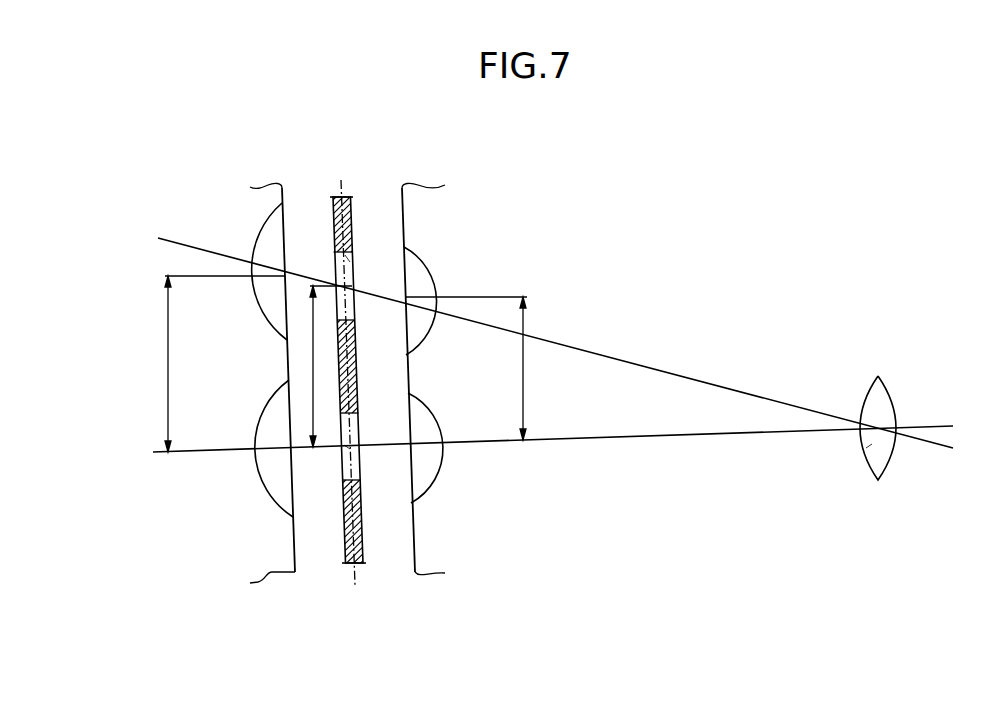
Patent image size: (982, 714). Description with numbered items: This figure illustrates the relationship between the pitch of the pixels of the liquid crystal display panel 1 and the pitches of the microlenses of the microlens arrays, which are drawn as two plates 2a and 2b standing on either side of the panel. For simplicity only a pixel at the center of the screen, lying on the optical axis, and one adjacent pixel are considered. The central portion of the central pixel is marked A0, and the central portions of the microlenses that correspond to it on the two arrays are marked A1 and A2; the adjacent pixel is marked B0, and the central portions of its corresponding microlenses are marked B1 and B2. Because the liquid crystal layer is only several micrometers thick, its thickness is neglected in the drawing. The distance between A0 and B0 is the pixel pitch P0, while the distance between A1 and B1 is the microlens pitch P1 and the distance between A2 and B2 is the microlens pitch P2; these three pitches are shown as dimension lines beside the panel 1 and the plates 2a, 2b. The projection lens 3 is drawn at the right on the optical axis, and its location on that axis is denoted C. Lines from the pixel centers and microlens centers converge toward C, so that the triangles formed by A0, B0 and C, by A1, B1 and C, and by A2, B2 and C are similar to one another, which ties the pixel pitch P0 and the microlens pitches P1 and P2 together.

The liquid crystal display panel 1 is at (346, 400).
The first lens plate 2a is at (268, 580).
The second lens plate 2b is at (440, 574).
The projection lens 3 is at (878, 376).
The location of the projection lens on the optical axis C is at (870, 447).
The central portion of the pixel at the center of the screen A0 is at (328, 463).
The central portion of the corresponding microlens A1 is at (292, 458).
The central portion of the corresponding microlens A2 is at (409, 453).
The adjacent pixel B0 is at (352, 258).
The central portion of the corresponding microlens B1 is at (284, 248).
The central portion of the corresponding microlens B2 is at (404, 290).
The pixel pitch P0 is at (320, 366).
The pitch of the microlenses P1 is at (208, 364).
The pitch of the microlenses P2 is at (466, 368).